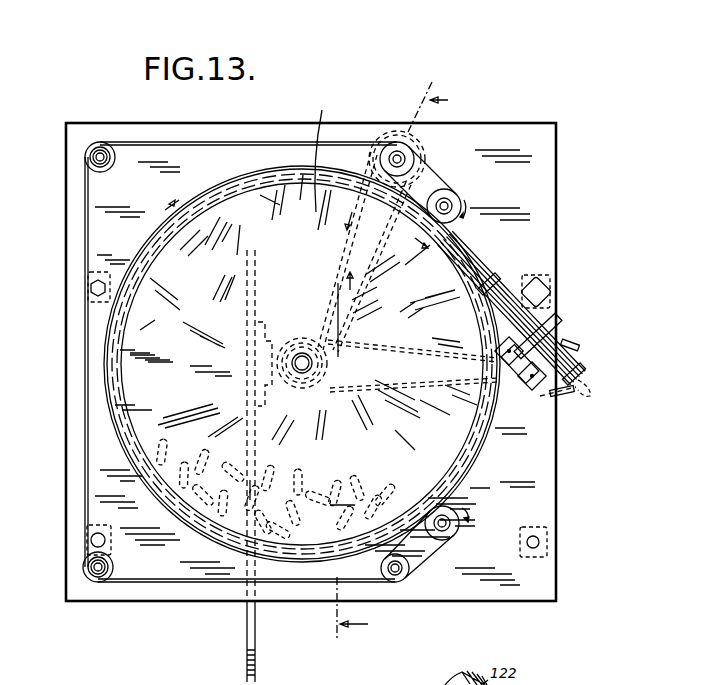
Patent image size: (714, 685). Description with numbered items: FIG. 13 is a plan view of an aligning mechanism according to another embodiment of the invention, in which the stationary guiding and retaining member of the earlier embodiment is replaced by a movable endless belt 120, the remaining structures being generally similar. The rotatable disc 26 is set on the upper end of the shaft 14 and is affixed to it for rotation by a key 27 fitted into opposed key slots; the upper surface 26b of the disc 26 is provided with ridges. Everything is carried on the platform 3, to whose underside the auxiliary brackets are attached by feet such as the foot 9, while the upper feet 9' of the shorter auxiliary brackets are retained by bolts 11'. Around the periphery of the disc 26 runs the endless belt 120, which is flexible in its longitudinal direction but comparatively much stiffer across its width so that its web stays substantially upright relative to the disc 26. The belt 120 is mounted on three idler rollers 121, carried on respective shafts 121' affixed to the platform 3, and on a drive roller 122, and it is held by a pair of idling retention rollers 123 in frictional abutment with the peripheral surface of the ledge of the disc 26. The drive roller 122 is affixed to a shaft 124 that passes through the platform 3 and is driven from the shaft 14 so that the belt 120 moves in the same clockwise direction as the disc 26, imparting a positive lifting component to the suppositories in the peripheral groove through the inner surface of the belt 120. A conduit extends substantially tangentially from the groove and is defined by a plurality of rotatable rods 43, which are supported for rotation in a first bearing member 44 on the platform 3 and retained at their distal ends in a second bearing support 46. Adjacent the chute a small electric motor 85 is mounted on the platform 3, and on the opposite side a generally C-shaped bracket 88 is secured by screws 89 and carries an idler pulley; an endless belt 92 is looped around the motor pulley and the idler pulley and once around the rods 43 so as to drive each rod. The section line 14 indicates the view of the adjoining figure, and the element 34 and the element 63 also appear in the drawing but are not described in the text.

The platform 3 is at (557, 486).
The foot 9 is at (551, 403).
The upper foot of shorter auxiliary bracket 9' is at (306, 422).
The bolt 11' is at (102, 526).
The shaft 14 is at (398, 367).
The rotatable disc 26 is at (263, 180).
The upper surface of disc 26b is at (321, 152).
The key 27 is at (303, 355).
The pin 34 is at (247, 656).
The rotatable rods 43 is at (574, 365).
The first bearing member 44 is at (499, 295).
The second bearing support 46 is at (583, 373).
The link 63 is at (566, 394).
The electric motor 85 is at (546, 302).
The C-shaped bracket 88 is at (513, 368).
The screws 89 is at (533, 380).
The endless belt 92 is at (548, 338).
The movable endless belt 120 is at (181, 600).
The idler rollers 121 is at (234, 367).
The shafts 121' is at (68, 383).
The drive roller 122 is at (394, 152).
The idling retention rollers 123 is at (451, 212).
The shaft 124 is at (406, 159).